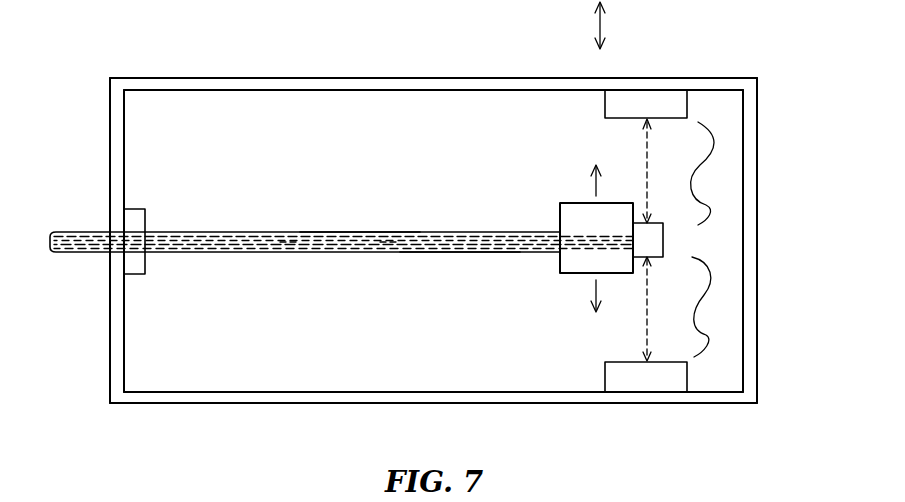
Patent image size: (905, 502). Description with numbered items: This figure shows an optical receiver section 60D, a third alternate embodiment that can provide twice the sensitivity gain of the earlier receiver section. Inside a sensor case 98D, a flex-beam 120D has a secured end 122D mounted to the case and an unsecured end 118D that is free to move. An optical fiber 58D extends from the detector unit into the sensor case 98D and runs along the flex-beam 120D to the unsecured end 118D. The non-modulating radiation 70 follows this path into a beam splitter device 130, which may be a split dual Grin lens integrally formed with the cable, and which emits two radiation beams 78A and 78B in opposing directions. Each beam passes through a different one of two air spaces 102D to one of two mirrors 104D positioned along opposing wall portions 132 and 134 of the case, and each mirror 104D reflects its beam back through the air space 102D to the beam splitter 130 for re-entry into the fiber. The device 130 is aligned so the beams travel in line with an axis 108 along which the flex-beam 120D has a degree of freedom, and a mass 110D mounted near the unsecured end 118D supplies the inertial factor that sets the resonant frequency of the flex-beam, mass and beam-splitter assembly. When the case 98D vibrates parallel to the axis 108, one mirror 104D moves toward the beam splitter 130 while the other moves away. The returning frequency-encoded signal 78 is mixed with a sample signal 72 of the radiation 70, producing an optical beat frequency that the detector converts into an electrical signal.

The optical receiver section 60D is at (195, 68).
The sensor case 98D is at (675, 76).
The wall portion 134 is at (483, 89).
The wall portion 132 is at (513, 390).
The optical fiber 58D is at (97, 226).
The sample signal 72 is at (350, 229).
The non-modulating radiation 70 is at (287, 244).
The frequency-encoded signal 78 is at (388, 244).
The flex-beam 120D is at (405, 229).
The secured end 122D is at (145, 209).
The mass 110D is at (566, 203).
The unsecured end 118D is at (636, 222).
The beam splitter device 130 is at (663, 240).
The radiation beam 78A is at (644, 148).
The radiation beam 78B is at (647, 318).
The mirrors 104D is at (688, 99).
The air spaces 102D is at (703, 170).
The axis 108 is at (597, 22).